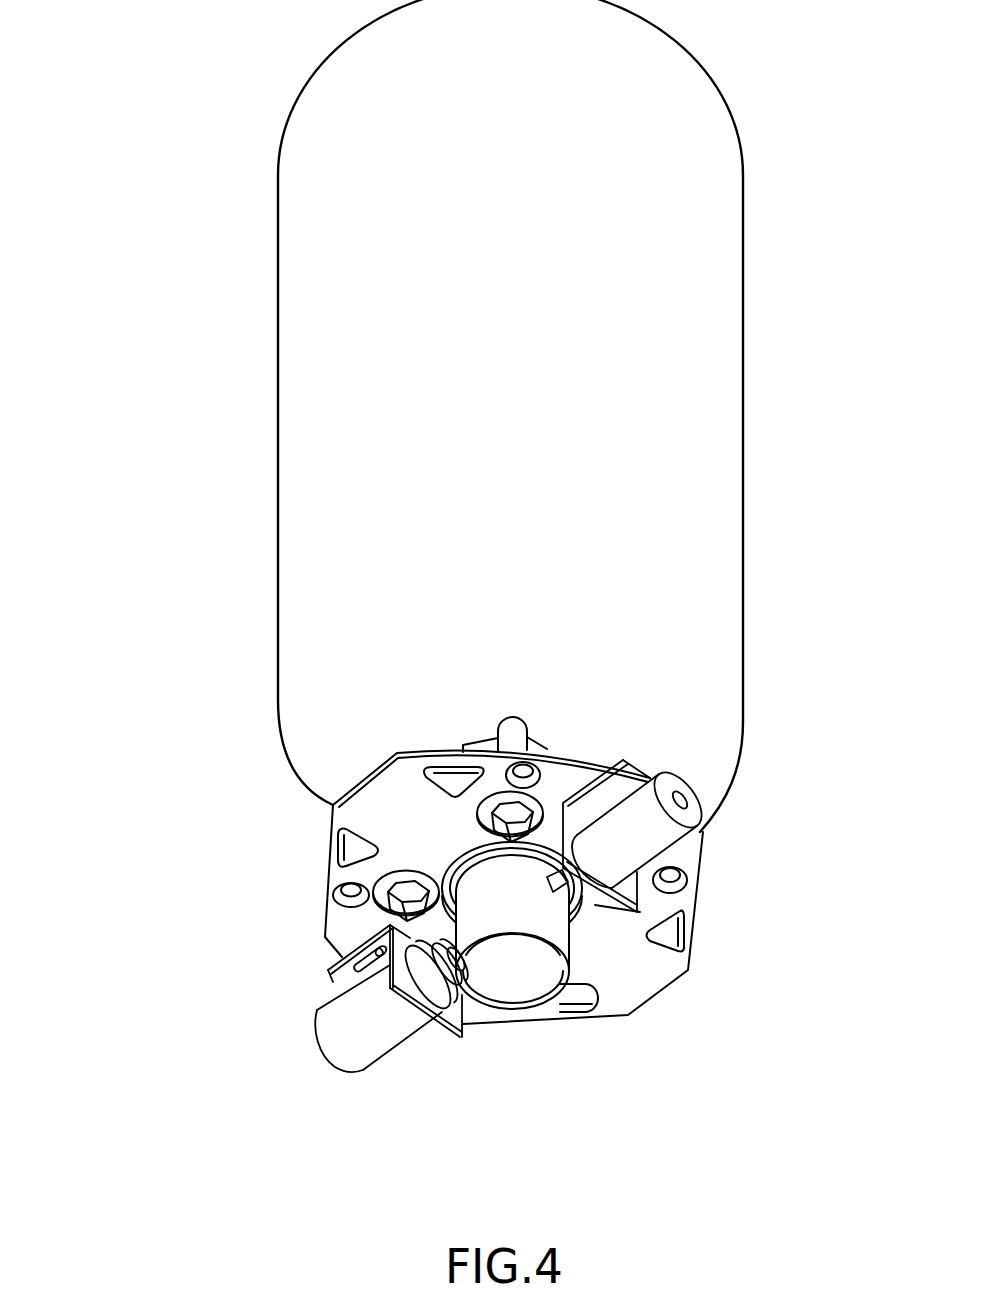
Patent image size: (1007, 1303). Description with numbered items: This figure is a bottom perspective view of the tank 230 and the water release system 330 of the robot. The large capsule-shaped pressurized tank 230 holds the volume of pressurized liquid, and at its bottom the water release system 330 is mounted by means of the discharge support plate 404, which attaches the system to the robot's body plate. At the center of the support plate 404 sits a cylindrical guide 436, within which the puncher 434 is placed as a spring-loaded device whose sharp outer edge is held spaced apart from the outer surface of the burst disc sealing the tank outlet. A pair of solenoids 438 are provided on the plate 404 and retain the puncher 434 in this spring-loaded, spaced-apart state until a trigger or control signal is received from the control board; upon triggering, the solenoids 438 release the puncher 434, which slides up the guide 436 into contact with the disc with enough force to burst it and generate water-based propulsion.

The tank 230 is at (763, 680).
The water release system 330 is at (739, 898).
The discharge support plate 404 is at (310, 876).
The puncher 434 is at (518, 950).
The cylindrical guide 436 is at (486, 1017).
The solenoids 438 is at (300, 1026).